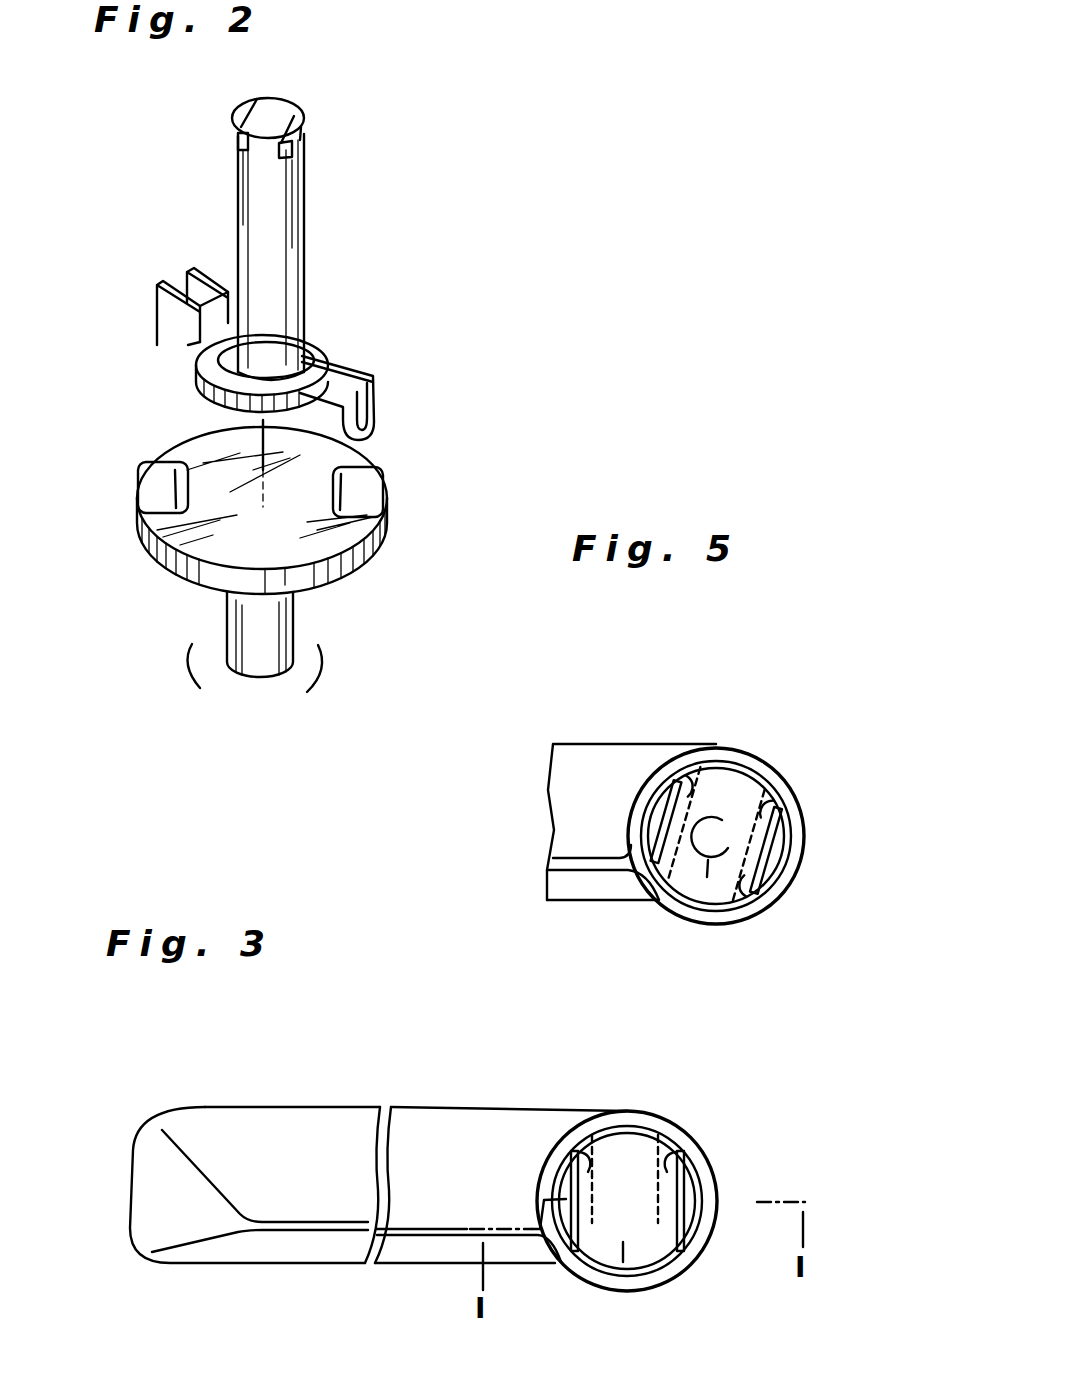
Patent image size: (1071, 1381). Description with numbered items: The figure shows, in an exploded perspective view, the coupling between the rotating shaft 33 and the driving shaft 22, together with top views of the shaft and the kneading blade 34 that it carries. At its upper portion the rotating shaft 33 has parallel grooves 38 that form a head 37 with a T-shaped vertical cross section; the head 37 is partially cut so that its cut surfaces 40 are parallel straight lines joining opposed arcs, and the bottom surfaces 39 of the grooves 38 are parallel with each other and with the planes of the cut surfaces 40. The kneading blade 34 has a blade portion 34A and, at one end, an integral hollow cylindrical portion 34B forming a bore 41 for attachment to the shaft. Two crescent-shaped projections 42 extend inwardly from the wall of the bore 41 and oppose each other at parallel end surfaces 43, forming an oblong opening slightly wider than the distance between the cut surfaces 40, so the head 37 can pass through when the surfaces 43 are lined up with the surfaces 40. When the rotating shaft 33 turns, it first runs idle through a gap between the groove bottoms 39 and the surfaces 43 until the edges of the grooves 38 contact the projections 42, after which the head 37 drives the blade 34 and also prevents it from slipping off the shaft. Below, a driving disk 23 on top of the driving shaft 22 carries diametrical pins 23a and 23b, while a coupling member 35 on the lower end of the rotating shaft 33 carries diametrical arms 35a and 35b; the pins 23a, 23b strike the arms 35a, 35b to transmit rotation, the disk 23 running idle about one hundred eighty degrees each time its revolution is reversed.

In FIG. 2, the driving shaft 22 is at (270, 632).
In FIG. 2, the driving disk 23 is at (261, 534).
In FIG. 2, the pin or projection 23a is at (155, 487).
In FIG. 2, the pin or projection 23b is at (367, 500).
In FIG. 2, the rotating shaft 33 is at (280, 272).
In FIG. 3, the kneading blade 34 is at (280, 1100).
In FIG. 3, the blade portion of kneading blade 34A is at (418, 1124).
In FIG. 3, the hollow cylindrical portion 34B is at (688, 1155).
In FIG. 2, the coupling member 35 is at (287, 354).
In FIG. 2, the arm 35a is at (173, 315).
In FIG. 2, the arm 35b is at (363, 367).
In FIG. 2, the head 37 is at (283, 110).
In FIG. 5, the head 37 is at (707, 877).
In FIG. 3, the head 37 is at (623, 1262).
In FIG. 2, the parallel grooves 38 is at (238, 142).
In FIG. 2, the bottom surface of groove 39 is at (240, 150).
In FIG. 5, the bottom surface of groove 39 is at (770, 790).
In FIG. 3, the bottom surface of groove 39 is at (592, 1223).
In FIG. 2, the cut surface 40 is at (253, 108).
In FIG. 5, the cut surface 40 is at (697, 777).
In FIG. 3, the cut surface 40 is at (587, 1147).
In FIG. 5, the bore 41 is at (747, 770).
In FIG. 3, the bore 41 is at (632, 1130).
In FIG. 5, the crescent-shaped projection 42 is at (648, 817).
In FIG. 3, the crescent-shaped projection 42 is at (562, 1172).
In FIG. 5, the parallel end surface 43 is at (668, 782).
In FIG. 3, the parallel end surface 43 is at (572, 1220).